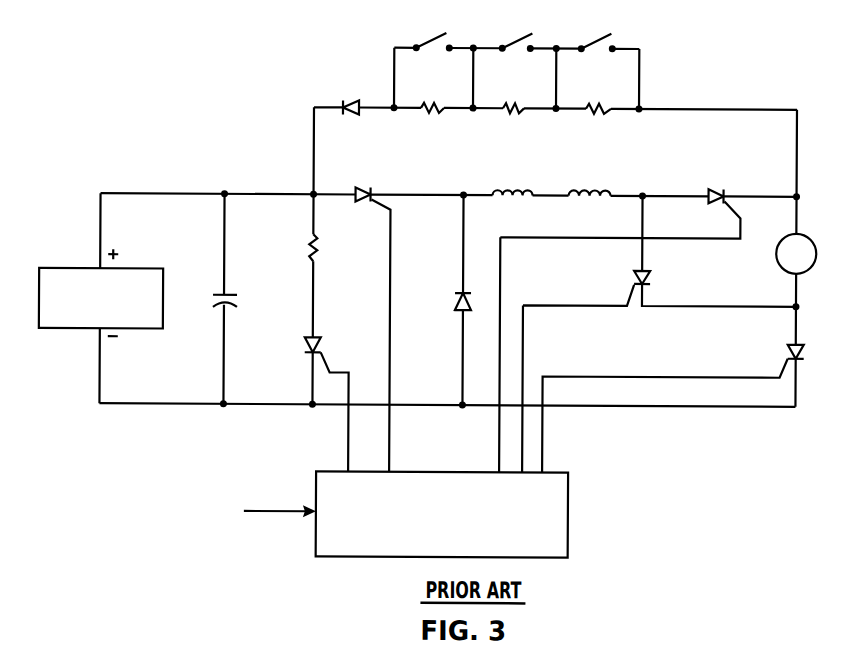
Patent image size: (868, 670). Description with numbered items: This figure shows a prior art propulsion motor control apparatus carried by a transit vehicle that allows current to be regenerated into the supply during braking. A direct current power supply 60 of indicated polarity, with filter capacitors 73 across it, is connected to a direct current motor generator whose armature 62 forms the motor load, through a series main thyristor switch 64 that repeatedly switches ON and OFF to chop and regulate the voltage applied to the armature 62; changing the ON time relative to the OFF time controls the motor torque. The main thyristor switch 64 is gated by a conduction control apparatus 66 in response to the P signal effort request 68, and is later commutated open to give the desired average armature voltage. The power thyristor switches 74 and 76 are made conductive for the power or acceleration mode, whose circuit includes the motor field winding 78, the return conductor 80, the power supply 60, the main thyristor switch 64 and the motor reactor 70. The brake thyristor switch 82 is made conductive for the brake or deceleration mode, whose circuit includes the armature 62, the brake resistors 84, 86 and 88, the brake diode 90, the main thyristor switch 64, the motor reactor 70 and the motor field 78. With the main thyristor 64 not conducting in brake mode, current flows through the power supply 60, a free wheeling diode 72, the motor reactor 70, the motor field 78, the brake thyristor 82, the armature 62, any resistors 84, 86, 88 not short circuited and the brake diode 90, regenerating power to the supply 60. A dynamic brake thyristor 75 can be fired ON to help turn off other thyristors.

The direct current power supply 60 is at (67, 269).
The motor armature 62 is at (810, 243).
The main thyristor switch 64 is at (365, 185).
The conduction control apparatus 66 is at (558, 472).
The P signal effort request 68 is at (292, 511).
The motor reactor 70 is at (510, 200).
The free wheeling diode 72 is at (455, 302).
The filter capacitors 73 is at (208, 303).
The power thyristor switch 74 is at (786, 352).
The dynamic brake T5 thyristor 75 is at (305, 349).
The power thyristor switch 76 is at (714, 204).
The motor field winding 78 is at (585, 200).
The return conductor 80 is at (667, 405).
The brake thyristor switch 82 is at (650, 282).
The brake resistor 84 is at (600, 101).
The brake resistor 86 is at (518, 101).
The brake resistor 88 is at (437, 101).
The brake diode 90 is at (345, 99).